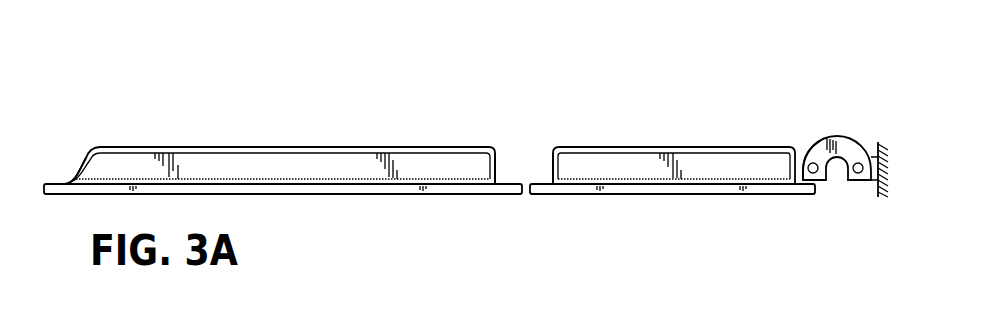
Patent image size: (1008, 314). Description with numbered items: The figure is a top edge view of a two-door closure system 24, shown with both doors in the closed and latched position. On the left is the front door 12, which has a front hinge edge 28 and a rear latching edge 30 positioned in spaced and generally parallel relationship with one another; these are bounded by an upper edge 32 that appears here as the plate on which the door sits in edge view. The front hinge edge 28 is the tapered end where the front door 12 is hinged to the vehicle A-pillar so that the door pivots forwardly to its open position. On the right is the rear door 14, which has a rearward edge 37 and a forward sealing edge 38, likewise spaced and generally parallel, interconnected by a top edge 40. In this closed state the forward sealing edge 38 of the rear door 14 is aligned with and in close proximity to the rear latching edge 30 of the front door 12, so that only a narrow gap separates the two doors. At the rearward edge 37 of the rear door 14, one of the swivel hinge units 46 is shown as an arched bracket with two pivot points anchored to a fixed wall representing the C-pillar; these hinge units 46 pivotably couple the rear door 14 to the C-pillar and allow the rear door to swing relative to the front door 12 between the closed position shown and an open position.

The front door 12 is at (277, 144).
The rear door 14 is at (707, 145).
The two-door closure system 24 is at (603, 86).
The front hinge edge 28 is at (76, 164).
The rear latching edge 30 is at (496, 170).
The upper edge 32 is at (405, 190).
The rearward edge 37 is at (801, 157).
The forward sealing edge 38 is at (551, 172).
The top edge 40 is at (683, 190).
The swivel hinge units 46 is at (835, 130).